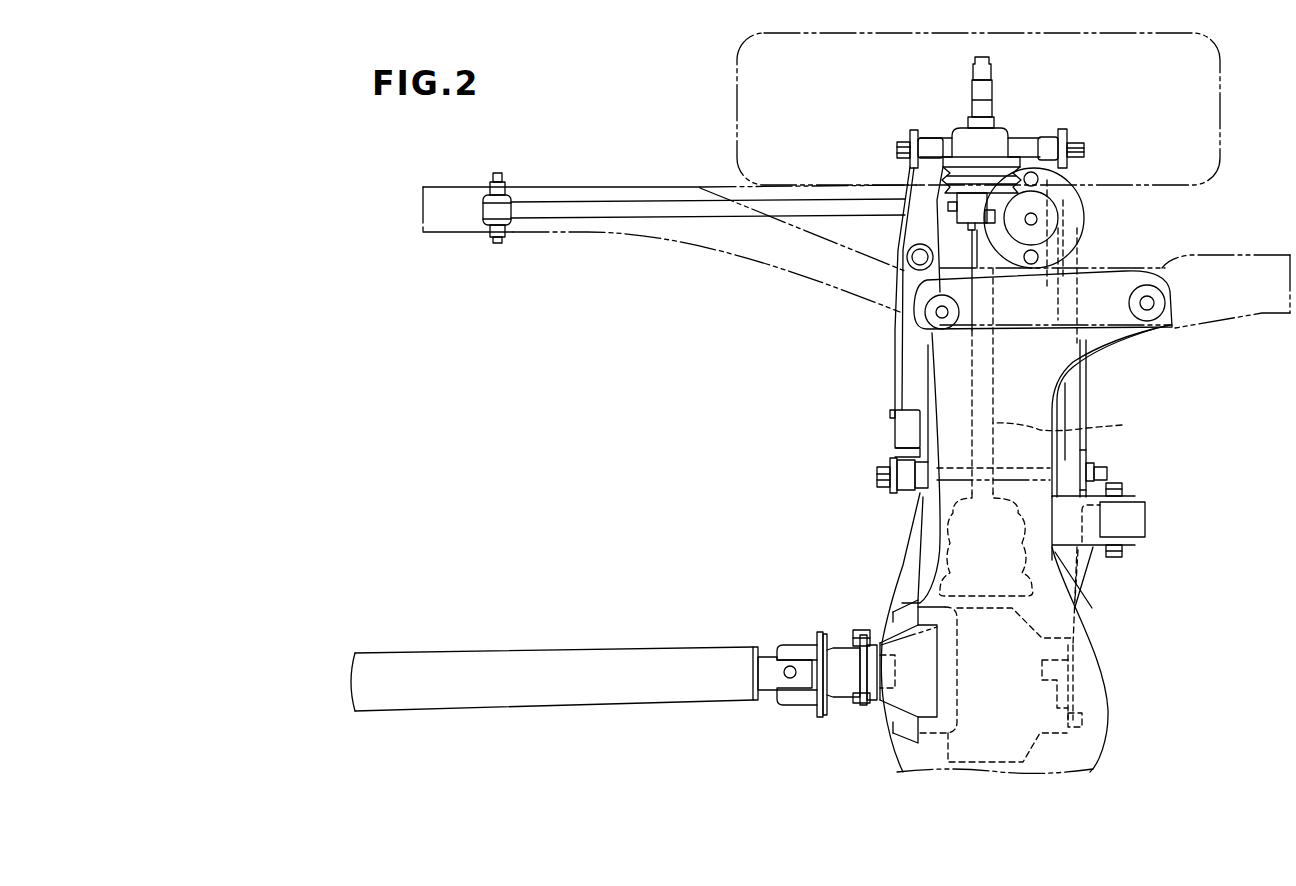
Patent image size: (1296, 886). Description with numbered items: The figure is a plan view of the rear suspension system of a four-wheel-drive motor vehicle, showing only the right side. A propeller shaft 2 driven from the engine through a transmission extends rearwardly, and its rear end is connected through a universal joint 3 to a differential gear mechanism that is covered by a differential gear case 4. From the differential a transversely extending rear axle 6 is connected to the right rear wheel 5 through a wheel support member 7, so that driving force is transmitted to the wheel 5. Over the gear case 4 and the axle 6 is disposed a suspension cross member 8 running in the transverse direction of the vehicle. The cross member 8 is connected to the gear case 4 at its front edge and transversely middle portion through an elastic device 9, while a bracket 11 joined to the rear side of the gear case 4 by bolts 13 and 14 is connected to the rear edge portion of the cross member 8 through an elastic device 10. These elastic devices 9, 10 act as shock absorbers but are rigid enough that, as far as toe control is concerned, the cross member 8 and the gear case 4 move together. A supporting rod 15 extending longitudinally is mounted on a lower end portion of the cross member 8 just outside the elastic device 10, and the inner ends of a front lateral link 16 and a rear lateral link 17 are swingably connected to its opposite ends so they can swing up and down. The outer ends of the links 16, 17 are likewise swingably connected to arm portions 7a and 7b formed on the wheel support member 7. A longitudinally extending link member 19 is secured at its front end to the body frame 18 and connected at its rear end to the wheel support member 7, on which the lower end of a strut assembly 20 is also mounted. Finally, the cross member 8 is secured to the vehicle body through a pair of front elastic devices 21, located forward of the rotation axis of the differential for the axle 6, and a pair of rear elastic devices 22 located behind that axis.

The propeller shaft 2 is at (655, 697).
The universal joint 3 is at (800, 697).
The differential gear case 4 is at (963, 754).
The rear wheel 5 is at (738, 98).
The rear axle 6 is at (1038, 502).
The wheel support member 7 is at (1008, 130).
The arm portion 7a is at (945, 138).
The arm portion 7b is at (1028, 146).
The suspension cross member 8 is at (1092, 341).
The elastic device 9 is at (855, 680).
The elastic device 10 is at (1146, 522).
The bracket 11 is at (1093, 568).
The bolt 13 is at (1082, 652).
The bolt 14 is at (1082, 724).
The supporting rod 15 is at (920, 492).
The front lateral link 16 is at (897, 294).
The rear lateral link 17 is at (1077, 268).
The body frame 18 is at (574, 184).
The link member 19 is at (688, 203).
The strut assembly 20 is at (1075, 212).
The front elastic device 21 is at (896, 350).
The rear elastic device 22 is at (1163, 268).